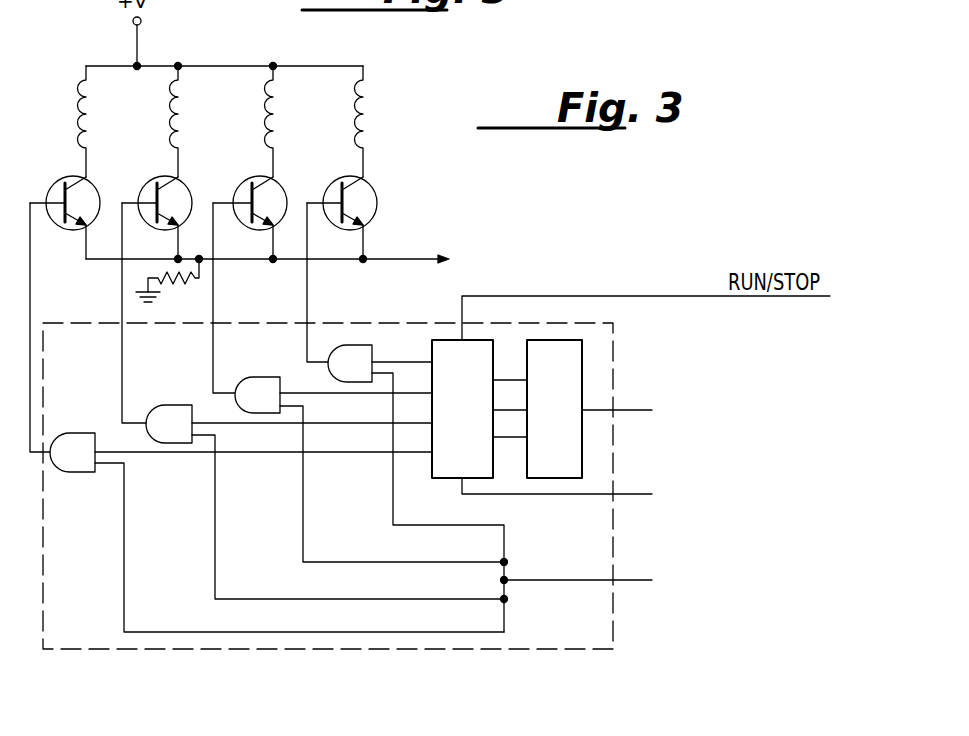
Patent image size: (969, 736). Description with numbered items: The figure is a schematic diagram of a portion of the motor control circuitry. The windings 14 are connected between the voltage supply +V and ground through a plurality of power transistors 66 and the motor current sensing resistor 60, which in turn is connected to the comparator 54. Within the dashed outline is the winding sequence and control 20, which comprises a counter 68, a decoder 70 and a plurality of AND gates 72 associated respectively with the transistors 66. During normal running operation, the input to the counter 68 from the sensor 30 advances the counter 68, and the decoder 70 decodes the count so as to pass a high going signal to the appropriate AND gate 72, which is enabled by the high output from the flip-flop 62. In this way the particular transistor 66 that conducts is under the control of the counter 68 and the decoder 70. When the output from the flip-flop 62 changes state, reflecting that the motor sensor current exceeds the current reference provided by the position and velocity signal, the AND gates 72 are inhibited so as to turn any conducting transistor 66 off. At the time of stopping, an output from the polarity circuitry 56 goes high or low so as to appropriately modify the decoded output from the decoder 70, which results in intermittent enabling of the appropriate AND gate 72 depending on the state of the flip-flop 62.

The windings 14 is at (80, 99).
The power transistors 66 is at (88, 198).
The motor current sensing resistor 60 is at (172, 284).
The AND gates 72 is at (78, 440).
The decoder 70 is at (444, 348).
The counter 68 is at (572, 356).
The winding sequence and control 20 is at (310, 650).
The comparator 54 is at (357, 255).
The sensor 30 is at (698, 410).
The polarity circuitry 56 is at (642, 492).
The flip-flop 62 is at (671, 581).